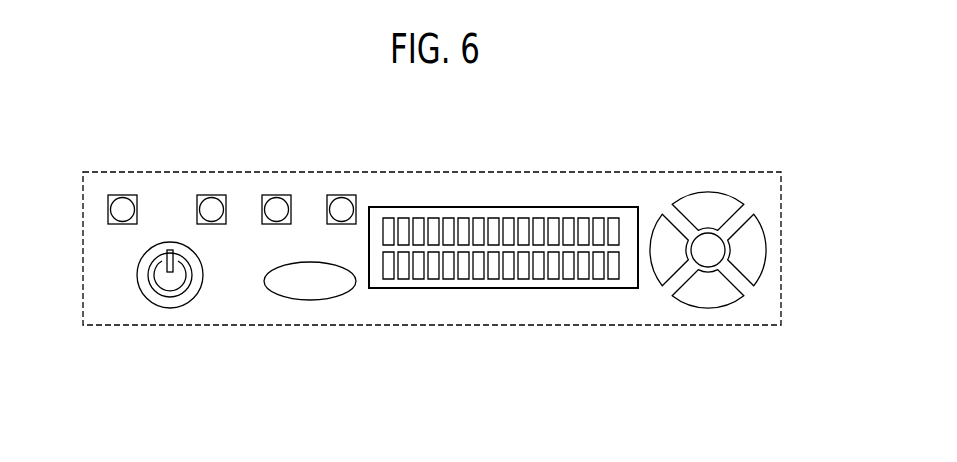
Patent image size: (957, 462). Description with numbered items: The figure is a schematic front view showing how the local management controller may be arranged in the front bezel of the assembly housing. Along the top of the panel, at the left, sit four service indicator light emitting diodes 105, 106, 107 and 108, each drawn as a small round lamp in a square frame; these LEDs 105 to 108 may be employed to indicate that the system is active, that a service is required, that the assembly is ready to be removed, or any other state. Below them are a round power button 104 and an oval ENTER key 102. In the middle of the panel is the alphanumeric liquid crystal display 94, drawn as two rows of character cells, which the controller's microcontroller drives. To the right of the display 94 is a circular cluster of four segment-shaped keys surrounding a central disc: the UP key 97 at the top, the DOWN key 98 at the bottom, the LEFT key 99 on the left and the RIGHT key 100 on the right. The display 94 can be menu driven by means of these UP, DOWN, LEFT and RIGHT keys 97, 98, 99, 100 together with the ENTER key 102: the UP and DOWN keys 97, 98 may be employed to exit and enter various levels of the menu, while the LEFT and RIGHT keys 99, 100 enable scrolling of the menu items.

The liquid crystal display 94 is at (507, 280).
The UP key 97 is at (707, 203).
The DOWN key 98 is at (708, 296).
The LEFT key 99 is at (663, 269).
The RIGHT key 100 is at (748, 249).
The ENTER key 102 is at (311, 300).
The power button 104 is at (170, 306).
The service indicator light emitting diode 105 is at (124, 205).
The service indicator light emitting diode 106 is at (212, 205).
The service indicator light emitting diode 107 is at (277, 205).
The service indicator light emitting diode 108 is at (342, 205).